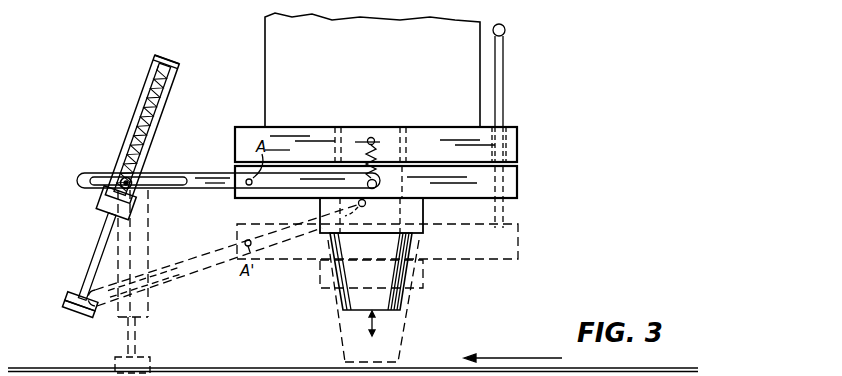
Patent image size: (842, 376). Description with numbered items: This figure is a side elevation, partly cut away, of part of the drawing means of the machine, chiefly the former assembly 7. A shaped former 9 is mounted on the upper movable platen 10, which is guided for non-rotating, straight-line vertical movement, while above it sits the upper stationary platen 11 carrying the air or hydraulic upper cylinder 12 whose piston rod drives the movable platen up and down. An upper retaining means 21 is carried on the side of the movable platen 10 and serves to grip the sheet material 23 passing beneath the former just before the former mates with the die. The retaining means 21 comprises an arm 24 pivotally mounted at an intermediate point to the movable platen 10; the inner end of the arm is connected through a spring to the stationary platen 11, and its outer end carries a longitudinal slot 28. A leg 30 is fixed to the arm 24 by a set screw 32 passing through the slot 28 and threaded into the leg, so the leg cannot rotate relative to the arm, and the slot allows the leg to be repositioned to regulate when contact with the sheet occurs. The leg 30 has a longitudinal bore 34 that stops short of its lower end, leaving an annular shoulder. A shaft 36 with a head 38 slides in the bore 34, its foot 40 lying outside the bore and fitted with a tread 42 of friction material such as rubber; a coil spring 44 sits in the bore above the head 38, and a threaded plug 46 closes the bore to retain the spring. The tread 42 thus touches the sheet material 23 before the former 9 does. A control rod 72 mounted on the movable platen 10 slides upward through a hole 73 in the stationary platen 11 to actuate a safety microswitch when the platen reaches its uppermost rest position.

The former assembly 7 is at (328, 297).
The shaped former 9 is at (379, 280).
The upper movable platen 10 is at (517, 185).
The upper stationary platen 11 is at (517, 152).
The upper cylinder 12 is at (278, 80).
The upper retaining means 21 is at (96, 200).
The sheet material 23 is at (353, 356).
The arm 24 is at (195, 178).
The longitudinal slot 28 is at (98, 181).
The leg 30 is at (162, 111).
The set screw 32 is at (146, 273).
The longitudinal bore 34 is at (143, 112).
The shaft 36 is at (100, 258).
The head 38 is at (106, 212).
The foot 40 is at (72, 294).
The tread 42 is at (80, 312).
The coil spring 44 is at (153, 86).
The threaded plug 46 is at (172, 61).
The control rod 72 is at (503, 87).
The hole 73 is at (508, 141).